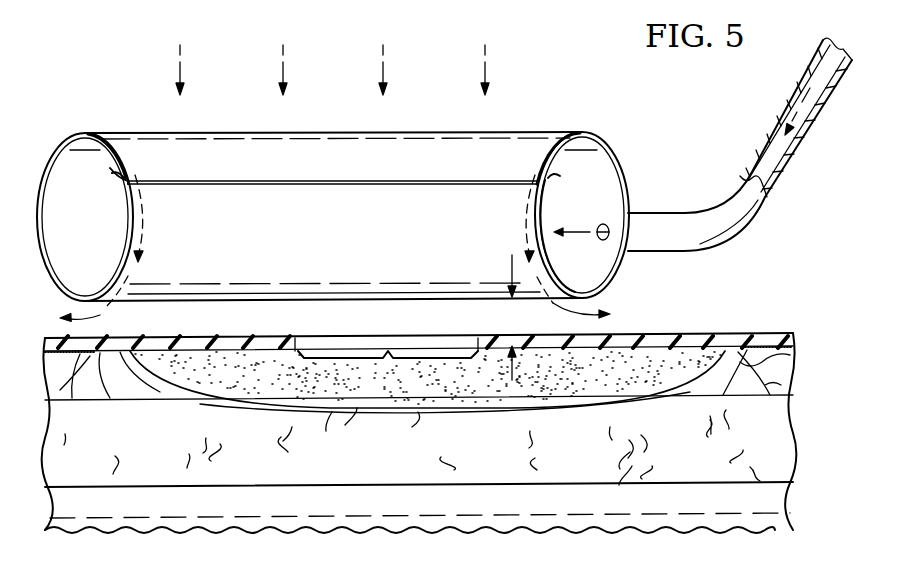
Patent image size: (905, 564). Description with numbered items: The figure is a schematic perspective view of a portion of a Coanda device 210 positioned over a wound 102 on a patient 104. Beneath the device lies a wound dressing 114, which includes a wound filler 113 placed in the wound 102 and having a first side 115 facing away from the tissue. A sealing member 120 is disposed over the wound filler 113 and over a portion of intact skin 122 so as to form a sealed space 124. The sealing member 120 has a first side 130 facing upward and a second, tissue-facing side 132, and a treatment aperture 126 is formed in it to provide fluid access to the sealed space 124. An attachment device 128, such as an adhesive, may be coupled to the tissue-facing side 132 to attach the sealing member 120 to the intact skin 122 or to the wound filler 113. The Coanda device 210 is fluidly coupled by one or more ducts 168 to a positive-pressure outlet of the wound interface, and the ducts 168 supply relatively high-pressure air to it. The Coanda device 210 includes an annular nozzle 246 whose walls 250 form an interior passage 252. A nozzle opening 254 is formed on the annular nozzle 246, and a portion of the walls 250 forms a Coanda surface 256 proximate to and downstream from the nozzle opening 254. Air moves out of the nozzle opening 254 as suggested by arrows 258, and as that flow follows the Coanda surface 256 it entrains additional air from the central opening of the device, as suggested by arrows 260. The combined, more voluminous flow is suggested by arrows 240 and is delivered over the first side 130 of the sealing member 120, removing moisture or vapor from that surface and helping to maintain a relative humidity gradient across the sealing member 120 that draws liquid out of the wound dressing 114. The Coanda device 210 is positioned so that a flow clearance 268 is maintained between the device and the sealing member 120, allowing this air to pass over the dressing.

The wound 102 is at (278, 410).
The patient 104 is at (796, 460).
The wound filler 113 is at (472, 395).
The wound dressing 114 is at (778, 330).
The first side 115 is at (687, 334).
The sealing member 120 is at (622, 336).
The intact skin 122 is at (790, 356).
The sealed space 124 is at (733, 350).
The treatment aperture 126 is at (388, 360).
The attachment device 128 is at (757, 334).
The first side 130 is at (53, 337).
The second, tissue-facing side 132 is at (108, 370).
The duct 168 is at (795, 165).
The Coanda device 210 is at (249, 128).
The arrows 240 is at (102, 312).
The annular nozzle 246 is at (542, 134).
The walls 250 is at (136, 132).
The interior passage 252 is at (104, 248).
The nozzle opening 254 is at (112, 173).
The Coanda surface 256 is at (128, 272).
The arrows 258 is at (137, 214).
The arrows 260 is at (285, 50).
The flow clearance 268 is at (508, 268).